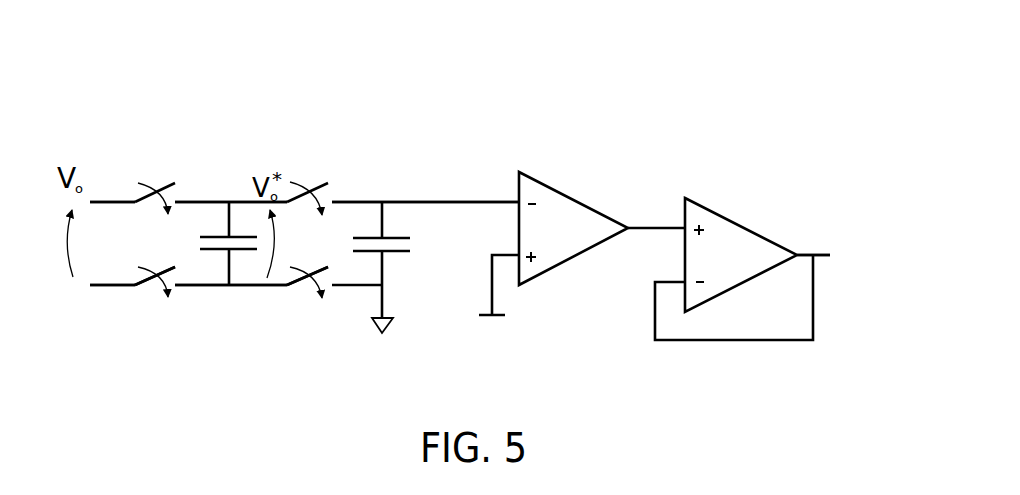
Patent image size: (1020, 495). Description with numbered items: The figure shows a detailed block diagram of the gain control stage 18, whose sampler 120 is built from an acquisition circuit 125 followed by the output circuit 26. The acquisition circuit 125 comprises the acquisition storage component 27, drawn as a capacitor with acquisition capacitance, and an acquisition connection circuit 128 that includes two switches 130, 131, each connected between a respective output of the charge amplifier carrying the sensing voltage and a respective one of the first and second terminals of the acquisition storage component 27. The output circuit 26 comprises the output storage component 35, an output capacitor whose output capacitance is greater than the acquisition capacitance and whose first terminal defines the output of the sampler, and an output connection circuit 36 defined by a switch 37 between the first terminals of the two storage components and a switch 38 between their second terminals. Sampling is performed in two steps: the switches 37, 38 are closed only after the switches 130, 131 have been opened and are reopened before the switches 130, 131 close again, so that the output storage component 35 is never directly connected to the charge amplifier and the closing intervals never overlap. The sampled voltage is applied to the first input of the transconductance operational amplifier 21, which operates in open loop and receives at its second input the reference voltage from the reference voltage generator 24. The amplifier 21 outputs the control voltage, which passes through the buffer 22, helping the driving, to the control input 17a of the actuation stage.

The gain control stage 18 is at (705, 97).
The transconductance operational amplifier 21 is at (578, 206).
The buffer 22 is at (732, 220).
The reference voltage generator 24 is at (497, 307).
The output circuit 26 is at (433, 145).
The acquisition storage component 27 is at (238, 253).
The output storage component 35 is at (392, 252).
The output connection circuit 36 is at (320, 365).
The switch 37 is at (328, 182).
The switch 38 is at (307, 283).
The sampler 120 is at (288, 121).
The acquisition circuit 125 is at (202, 135).
The acquisition connection circuit 128 is at (163, 364).
The switch 130 is at (155, 185).
The switch 131 is at (141, 298).
The control input 17a is at (841, 258).